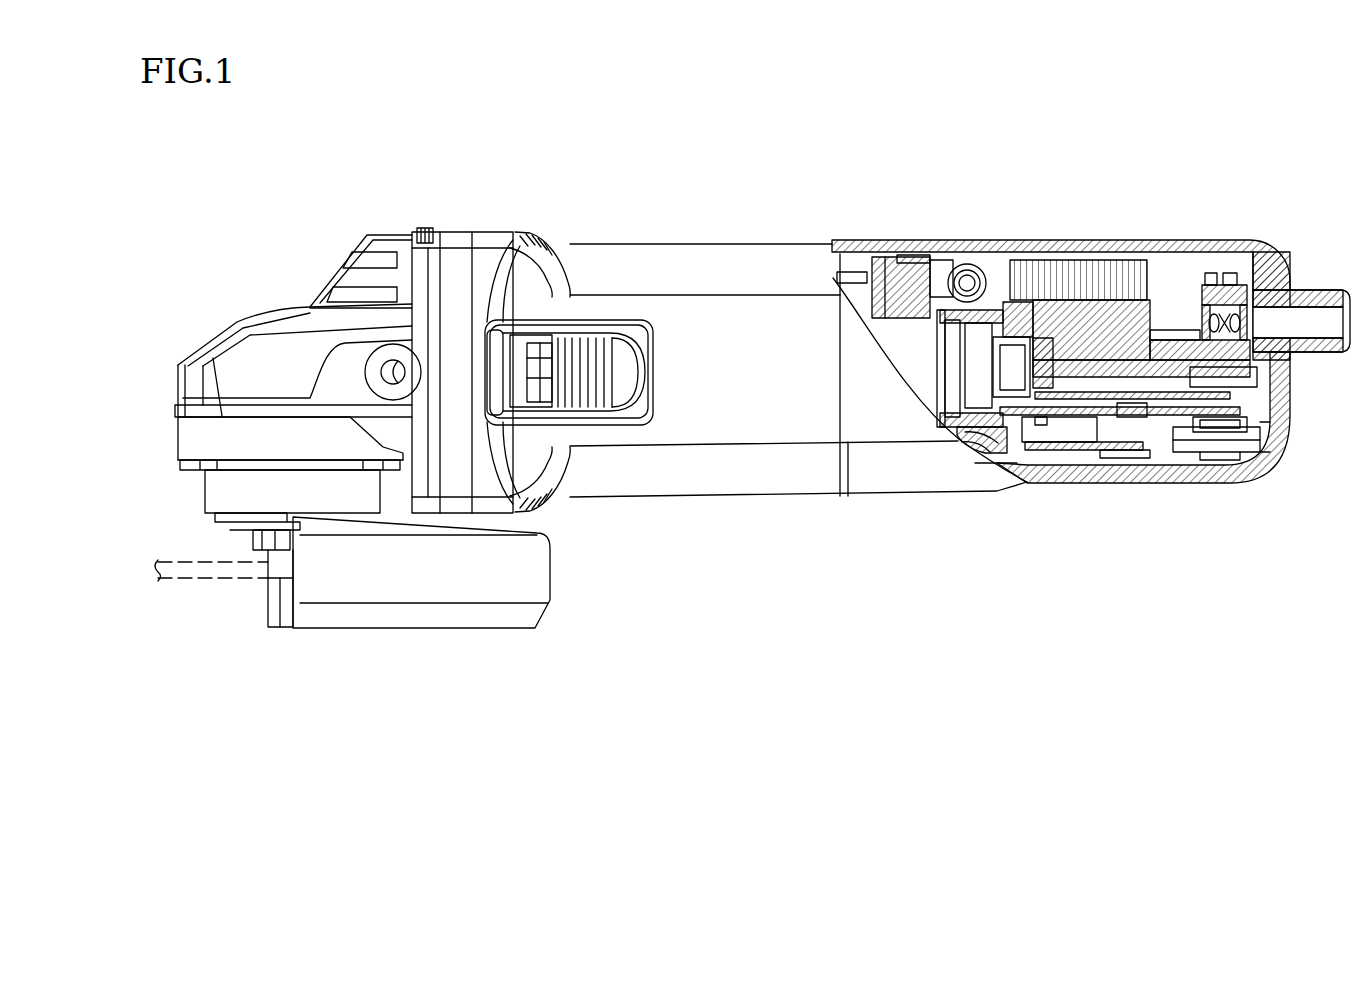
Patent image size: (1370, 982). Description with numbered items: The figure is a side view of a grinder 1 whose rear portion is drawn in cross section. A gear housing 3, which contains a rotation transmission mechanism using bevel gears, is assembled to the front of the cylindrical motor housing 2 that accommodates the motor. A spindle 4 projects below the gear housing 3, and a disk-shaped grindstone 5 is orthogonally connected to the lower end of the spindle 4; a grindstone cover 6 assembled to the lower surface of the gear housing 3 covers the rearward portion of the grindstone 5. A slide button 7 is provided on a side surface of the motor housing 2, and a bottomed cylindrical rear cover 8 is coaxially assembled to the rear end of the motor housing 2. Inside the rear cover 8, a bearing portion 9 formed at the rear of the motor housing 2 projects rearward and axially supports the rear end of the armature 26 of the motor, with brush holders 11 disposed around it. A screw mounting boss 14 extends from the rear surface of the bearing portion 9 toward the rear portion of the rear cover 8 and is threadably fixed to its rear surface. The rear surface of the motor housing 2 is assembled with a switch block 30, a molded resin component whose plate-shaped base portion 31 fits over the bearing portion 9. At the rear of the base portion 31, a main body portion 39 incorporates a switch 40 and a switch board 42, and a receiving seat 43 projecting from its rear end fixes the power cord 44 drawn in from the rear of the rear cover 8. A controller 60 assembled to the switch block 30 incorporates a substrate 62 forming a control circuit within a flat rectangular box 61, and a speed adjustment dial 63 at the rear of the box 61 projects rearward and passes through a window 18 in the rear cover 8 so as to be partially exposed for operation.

The grinder 1 is at (840, 183).
The motor housing 2 is at (698, 252).
The gear housing 3 is at (272, 322).
The spindle 4 is at (284, 612).
The grindstone 5 is at (210, 582).
The grindstone cover 6 is at (487, 585).
The slide button 7 is at (597, 362).
The rear cover 8 is at (1186, 250).
The bearing portion 9 is at (1025, 244).
The brush holder 11 is at (896, 246).
The screw mounting boss 14 is at (1126, 442).
The window 18 is at (1272, 432).
The armature 26 is at (968, 455).
The switch block 30 is at (1143, 250).
The base portion 31 is at (1006, 244).
The main body portion 39 is at (1160, 250).
The switch 40 is at (1094, 244).
The switch board 42 is at (1054, 244).
The receiving seat 43 is at (1237, 248).
The power cord 44 is at (1200, 250).
The controller 60 is at (1063, 447).
The box 61 is at (1178, 440).
The substrate 62 is at (1143, 450).
The speed adjustment dial 63 is at (1257, 445).